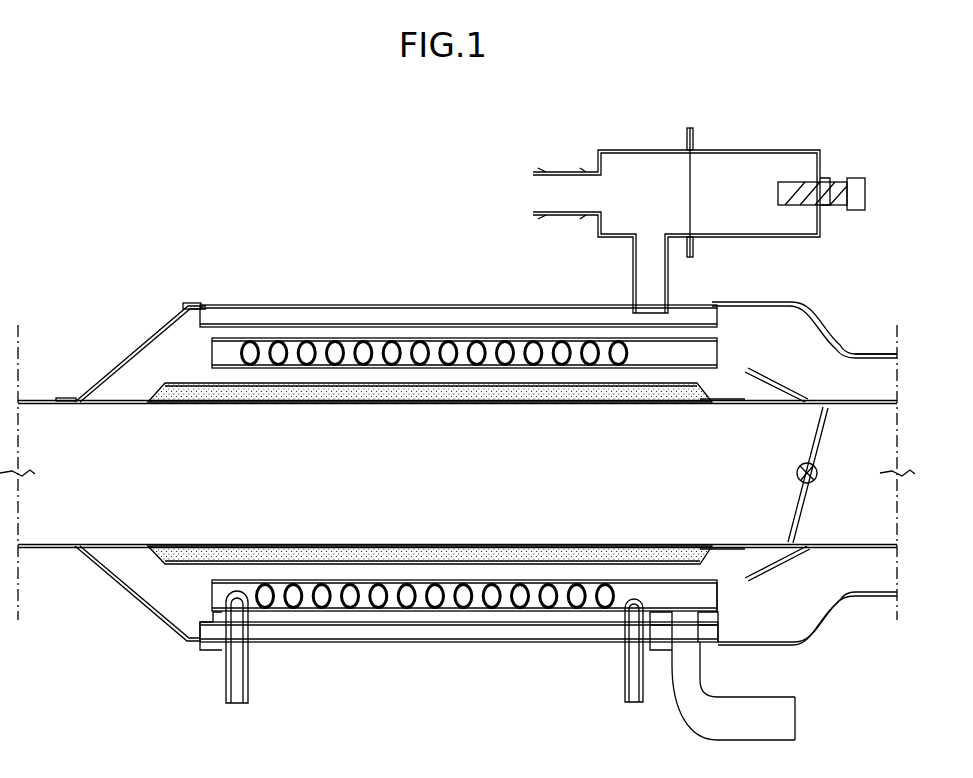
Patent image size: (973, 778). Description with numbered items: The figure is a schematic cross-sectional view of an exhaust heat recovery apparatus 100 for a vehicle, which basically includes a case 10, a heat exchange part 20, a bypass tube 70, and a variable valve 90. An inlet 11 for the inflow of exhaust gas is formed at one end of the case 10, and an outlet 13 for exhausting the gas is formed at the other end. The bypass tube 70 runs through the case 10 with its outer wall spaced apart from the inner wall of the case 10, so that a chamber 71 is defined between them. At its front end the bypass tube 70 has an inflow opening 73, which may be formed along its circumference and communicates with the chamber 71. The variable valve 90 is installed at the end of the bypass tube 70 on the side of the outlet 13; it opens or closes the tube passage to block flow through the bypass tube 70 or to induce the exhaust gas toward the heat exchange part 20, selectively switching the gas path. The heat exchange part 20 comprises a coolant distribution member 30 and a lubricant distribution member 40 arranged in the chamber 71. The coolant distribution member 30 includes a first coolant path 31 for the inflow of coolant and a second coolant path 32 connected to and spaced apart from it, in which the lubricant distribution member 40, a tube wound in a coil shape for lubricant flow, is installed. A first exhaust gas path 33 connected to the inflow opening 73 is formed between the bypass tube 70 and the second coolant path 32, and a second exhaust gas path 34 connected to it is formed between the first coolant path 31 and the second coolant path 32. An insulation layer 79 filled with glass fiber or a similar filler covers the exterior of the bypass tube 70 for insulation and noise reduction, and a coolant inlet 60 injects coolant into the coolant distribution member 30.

The exhaust heat recovery apparatus 100 is at (338, 147).
The case 10 is at (479, 305).
The inlet 11 is at (63, 398).
The outlet 13 is at (870, 354).
The heat exchange part 20 is at (195, 355).
The coolant distribution member 30 is at (365, 248).
The first coolant path 31 is at (305, 318).
The second coolant path 32 is at (347, 345).
The first exhaust gas path 33 is at (412, 378).
The second exhaust gas path 34 is at (440, 335).
The lubricant distribution member 40 is at (522, 345).
The coolant inlet 60 is at (588, 153).
The bypass tube 70 is at (116, 552).
The chamber 71 is at (182, 340).
The inflow opening 73 is at (763, 395).
The insulation layer 79 is at (590, 392).
The variable valve 90 is at (816, 466).